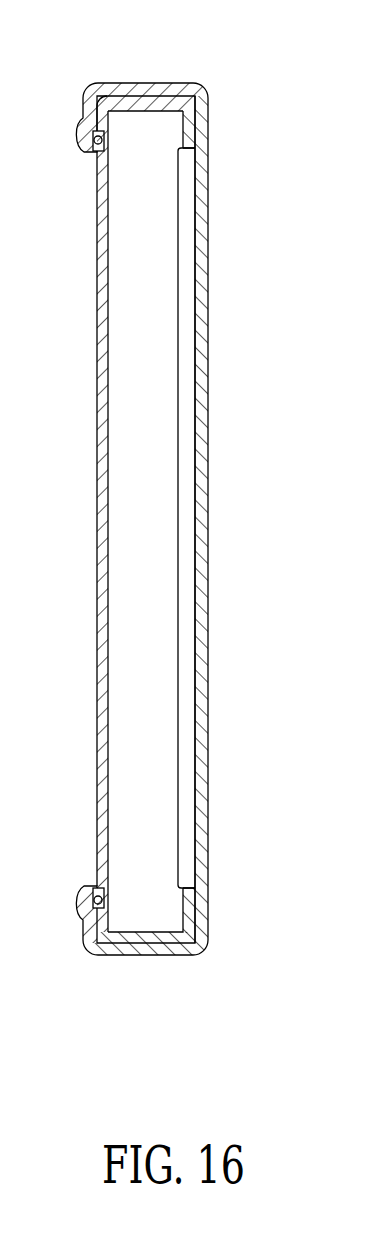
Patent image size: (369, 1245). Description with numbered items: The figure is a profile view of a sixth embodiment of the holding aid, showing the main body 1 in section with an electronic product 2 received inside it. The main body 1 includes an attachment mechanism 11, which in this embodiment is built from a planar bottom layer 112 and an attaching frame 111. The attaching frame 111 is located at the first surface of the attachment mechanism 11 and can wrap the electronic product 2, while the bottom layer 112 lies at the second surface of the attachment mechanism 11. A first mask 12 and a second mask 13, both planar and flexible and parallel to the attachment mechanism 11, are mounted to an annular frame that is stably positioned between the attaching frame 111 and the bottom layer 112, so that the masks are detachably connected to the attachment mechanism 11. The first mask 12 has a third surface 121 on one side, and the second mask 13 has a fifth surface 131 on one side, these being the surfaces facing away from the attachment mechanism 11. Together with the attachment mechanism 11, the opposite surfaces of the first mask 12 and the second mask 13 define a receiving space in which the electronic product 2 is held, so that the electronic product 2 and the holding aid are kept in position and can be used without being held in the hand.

The main body 1 is at (212, 87).
The attachment mechanism 11 is at (135, 938).
The attaching frame 111 is at (130, 101).
The bottom layer 112 is at (100, 544).
The first mask 12 is at (200, 207).
The third surface 121 is at (208, 170).
The second mask 13 is at (200, 472).
The fifth surface 131 is at (210, 578).
The electronic product 2 is at (162, 265).